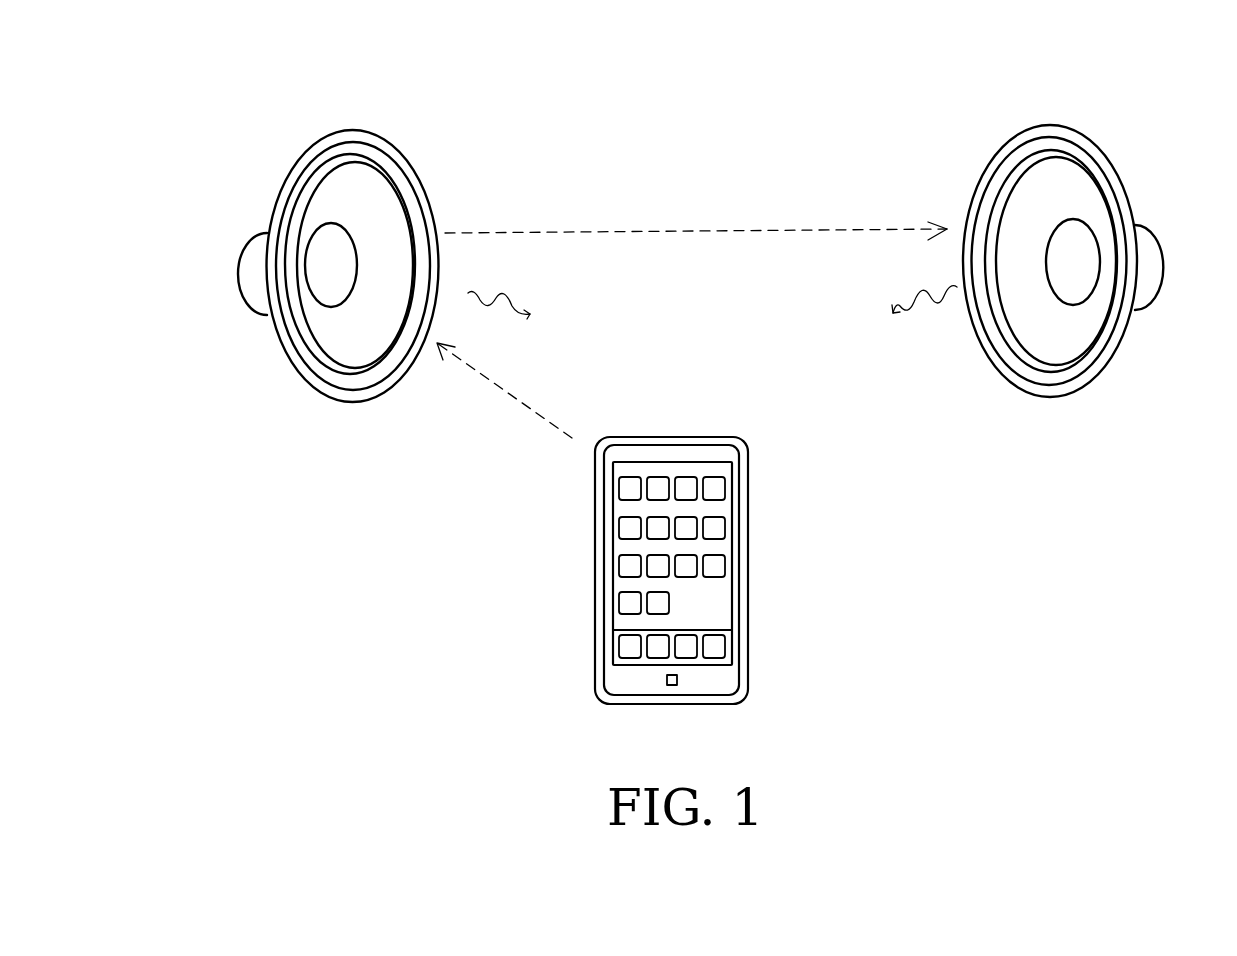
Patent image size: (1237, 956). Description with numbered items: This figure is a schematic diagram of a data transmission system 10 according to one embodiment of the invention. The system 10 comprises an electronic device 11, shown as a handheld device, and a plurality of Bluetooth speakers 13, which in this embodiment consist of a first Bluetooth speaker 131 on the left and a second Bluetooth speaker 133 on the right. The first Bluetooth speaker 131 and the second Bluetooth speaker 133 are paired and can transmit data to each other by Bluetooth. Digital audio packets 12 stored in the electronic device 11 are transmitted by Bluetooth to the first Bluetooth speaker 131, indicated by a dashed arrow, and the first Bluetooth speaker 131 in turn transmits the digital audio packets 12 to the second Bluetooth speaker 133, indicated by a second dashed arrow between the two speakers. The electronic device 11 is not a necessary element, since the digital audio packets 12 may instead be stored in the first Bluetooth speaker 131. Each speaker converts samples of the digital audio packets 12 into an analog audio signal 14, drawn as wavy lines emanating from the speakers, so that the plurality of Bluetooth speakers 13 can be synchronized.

The data transmission system 10 is at (392, 509).
The electronic device 11 is at (767, 510).
The digital audio packets 12 is at (692, 323).
The plurality of Bluetooth speakers 13 is at (452, 112).
The first Bluetooth speaker 131 is at (437, 175).
The second Bluetooth speaker 133 is at (968, 172).
The analog audio signal 14 is at (712, 295).